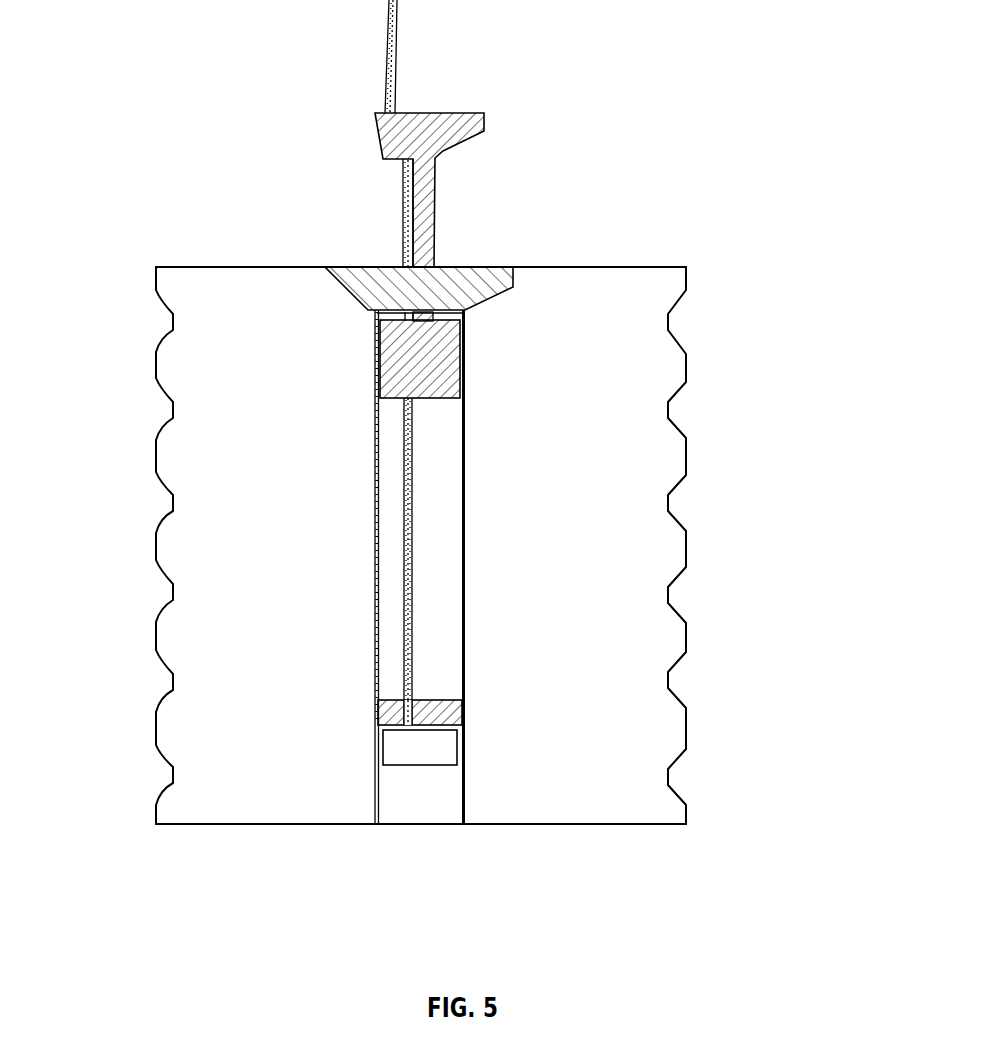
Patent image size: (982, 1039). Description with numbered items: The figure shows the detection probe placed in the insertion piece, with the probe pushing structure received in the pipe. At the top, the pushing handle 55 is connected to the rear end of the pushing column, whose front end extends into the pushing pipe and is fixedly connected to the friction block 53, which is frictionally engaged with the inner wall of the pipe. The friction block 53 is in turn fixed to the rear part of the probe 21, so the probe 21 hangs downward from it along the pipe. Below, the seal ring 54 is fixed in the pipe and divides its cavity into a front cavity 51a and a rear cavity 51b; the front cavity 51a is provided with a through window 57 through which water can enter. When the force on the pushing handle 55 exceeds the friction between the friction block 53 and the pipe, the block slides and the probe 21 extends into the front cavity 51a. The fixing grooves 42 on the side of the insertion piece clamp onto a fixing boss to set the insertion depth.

The probe 21 is at (403, 498).
The fixing grooves 42 is at (160, 770).
The front cavity 51a is at (432, 558).
The rear cavity 51b is at (435, 805).
The friction block 53 is at (437, 360).
The seal ring 54 is at (447, 708).
The pushing handle 55 is at (458, 113).
The through window 57 is at (405, 750).